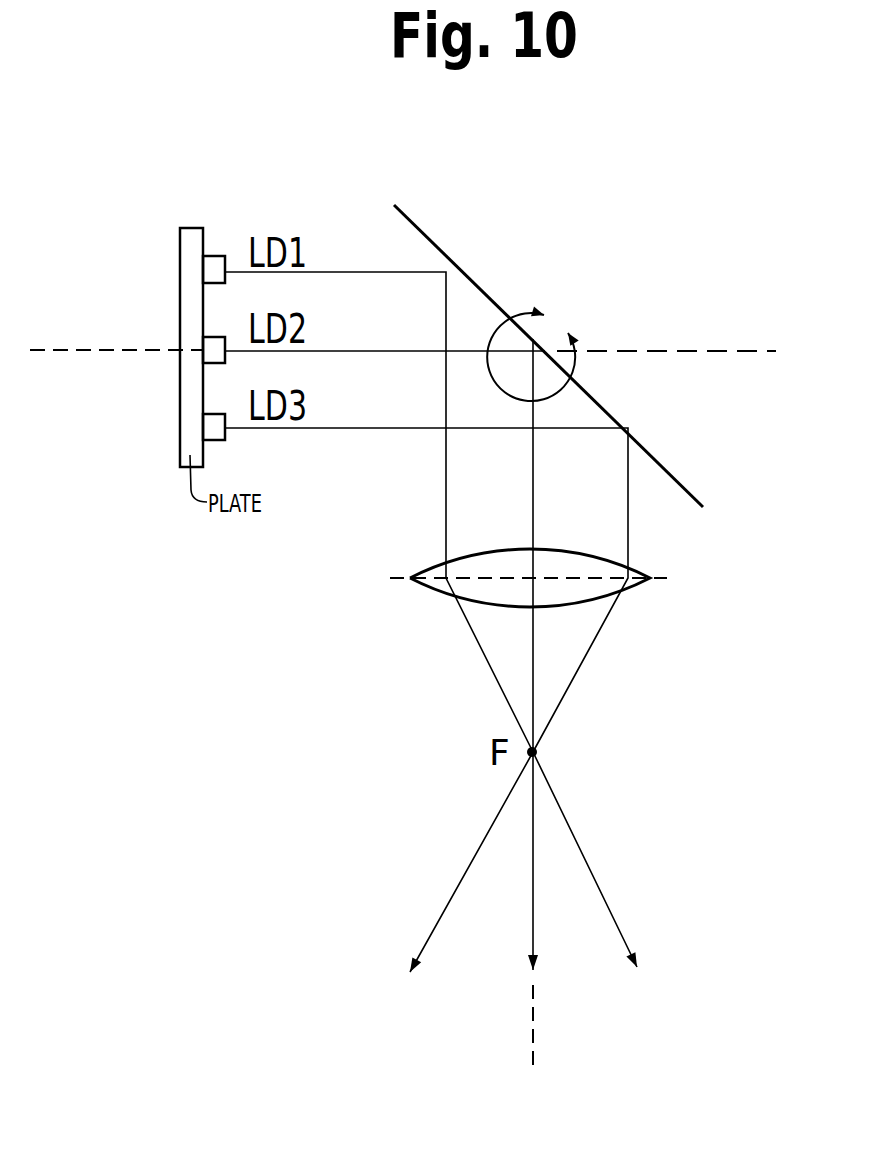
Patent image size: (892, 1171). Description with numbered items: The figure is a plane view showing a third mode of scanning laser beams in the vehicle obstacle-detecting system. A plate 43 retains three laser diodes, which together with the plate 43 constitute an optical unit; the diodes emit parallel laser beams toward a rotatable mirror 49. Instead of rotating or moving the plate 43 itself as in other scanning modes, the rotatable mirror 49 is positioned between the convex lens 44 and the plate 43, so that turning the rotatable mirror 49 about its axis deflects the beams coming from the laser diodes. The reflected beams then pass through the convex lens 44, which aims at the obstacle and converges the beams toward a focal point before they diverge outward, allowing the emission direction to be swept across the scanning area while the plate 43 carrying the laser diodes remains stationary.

The plate 43 is at (192, 240).
The rotatable mirror 49 is at (423, 232).
The convex lens 44 is at (574, 578).